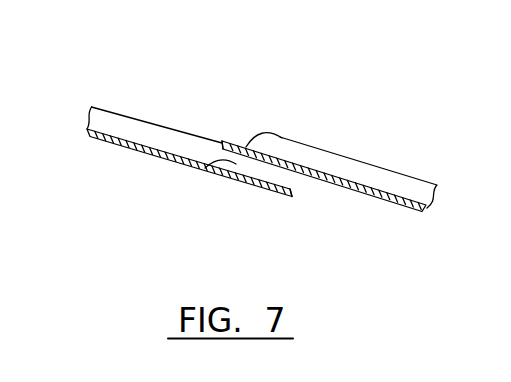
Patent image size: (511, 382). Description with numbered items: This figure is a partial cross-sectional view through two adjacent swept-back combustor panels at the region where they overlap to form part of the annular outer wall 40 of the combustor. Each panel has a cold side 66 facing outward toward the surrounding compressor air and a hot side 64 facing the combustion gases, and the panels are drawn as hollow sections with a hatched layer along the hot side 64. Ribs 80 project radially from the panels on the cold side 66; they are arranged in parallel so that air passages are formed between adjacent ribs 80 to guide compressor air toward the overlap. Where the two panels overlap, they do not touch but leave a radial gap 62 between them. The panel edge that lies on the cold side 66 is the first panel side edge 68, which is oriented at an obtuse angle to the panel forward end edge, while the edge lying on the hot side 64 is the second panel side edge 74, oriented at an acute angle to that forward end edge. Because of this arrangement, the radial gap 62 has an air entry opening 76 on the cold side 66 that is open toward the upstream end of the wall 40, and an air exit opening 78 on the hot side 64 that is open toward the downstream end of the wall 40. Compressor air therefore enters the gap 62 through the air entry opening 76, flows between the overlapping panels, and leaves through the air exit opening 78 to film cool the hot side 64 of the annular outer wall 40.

The annular outer wall 40 is at (202, 157).
The cold side 66 is at (323, 160).
The ribs 80 is at (140, 120).
The hot side 64 is at (147, 152).
The first panel side edge 68 is at (225, 143).
The radial gap 62 is at (257, 150).
The air entry opening 76 is at (208, 163).
The second panel side edge 74 is at (292, 192).
The air exit opening 78 is at (293, 177).